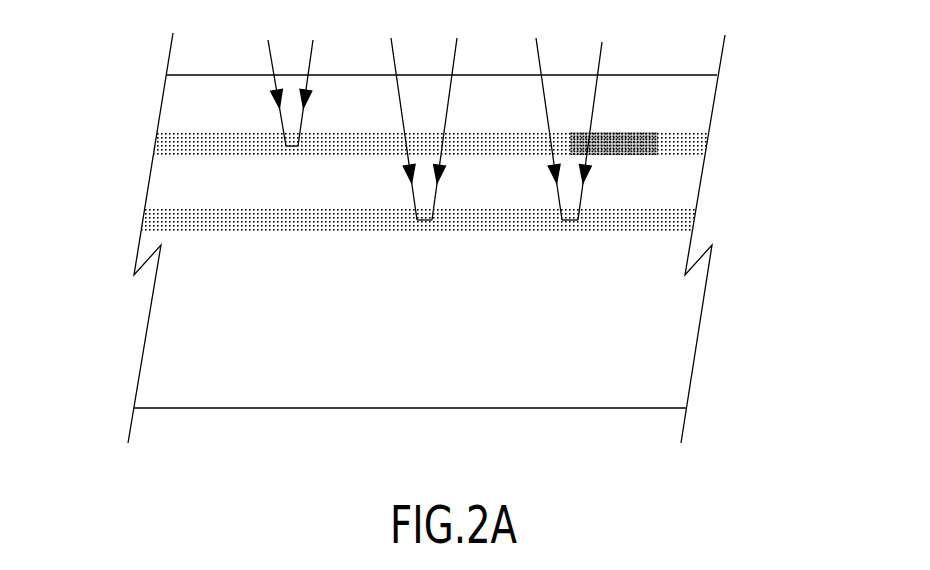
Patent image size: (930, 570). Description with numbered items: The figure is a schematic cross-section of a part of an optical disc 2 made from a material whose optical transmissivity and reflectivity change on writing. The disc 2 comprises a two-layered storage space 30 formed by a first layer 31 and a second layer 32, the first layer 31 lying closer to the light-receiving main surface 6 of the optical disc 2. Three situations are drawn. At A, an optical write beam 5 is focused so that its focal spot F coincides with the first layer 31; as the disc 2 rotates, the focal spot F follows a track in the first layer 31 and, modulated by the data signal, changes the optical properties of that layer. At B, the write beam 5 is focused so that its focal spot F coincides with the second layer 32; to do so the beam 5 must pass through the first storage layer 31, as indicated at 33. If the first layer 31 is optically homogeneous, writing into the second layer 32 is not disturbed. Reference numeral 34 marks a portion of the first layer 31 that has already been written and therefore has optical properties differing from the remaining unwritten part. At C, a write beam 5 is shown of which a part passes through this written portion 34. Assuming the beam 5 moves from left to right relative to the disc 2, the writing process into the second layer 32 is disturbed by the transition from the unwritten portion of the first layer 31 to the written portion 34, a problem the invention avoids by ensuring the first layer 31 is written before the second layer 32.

The optical disc 2 is at (380, 234).
The optical write beam 5 is at (420, 115).
The light-receiving main surface 6 is at (652, 75).
The two-layered storage space 30 is at (489, 184).
The first layer 31 is at (467, 166).
The second layer 32 is at (461, 221).
The passage of write beam through first storage layer 33 is at (420, 152).
The written portion of the first layer 34 is at (657, 158).
The writing into first layer A is at (275, 94).
The writing into second layer B is at (424, 115).
The write beam partly passing through written portion C is at (569, 115).
The focal spot F is at (290, 148).